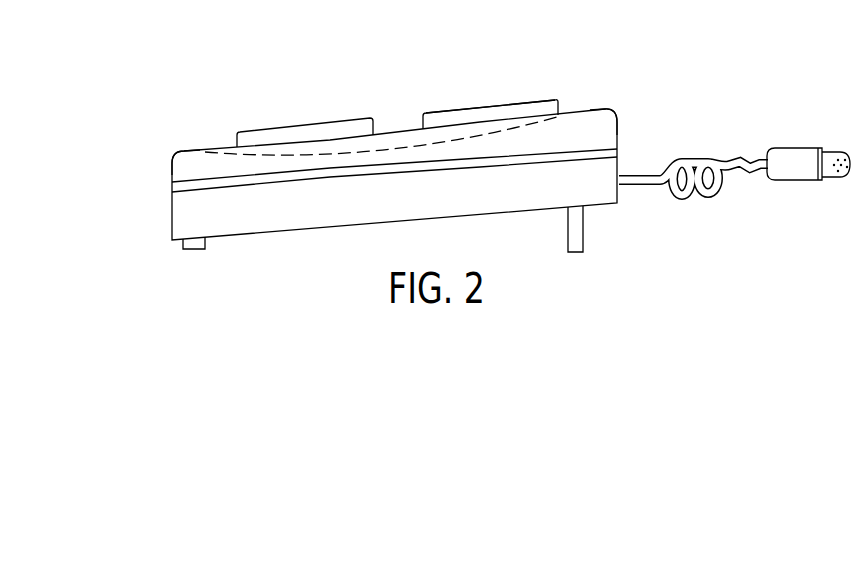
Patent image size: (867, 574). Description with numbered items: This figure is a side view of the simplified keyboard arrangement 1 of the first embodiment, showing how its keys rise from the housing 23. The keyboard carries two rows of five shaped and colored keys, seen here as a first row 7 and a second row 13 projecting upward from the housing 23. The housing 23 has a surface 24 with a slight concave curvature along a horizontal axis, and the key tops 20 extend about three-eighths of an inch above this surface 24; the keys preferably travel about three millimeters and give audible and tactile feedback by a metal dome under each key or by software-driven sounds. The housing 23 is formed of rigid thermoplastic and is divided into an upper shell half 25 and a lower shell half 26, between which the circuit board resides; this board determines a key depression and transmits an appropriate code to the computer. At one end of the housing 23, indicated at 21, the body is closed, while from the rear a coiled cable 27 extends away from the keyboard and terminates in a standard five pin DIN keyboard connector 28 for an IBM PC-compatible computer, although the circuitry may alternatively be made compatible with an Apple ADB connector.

The simplified keyboard arrangement 1 is at (170, 173).
The first row 7 is at (492, 106).
The second row 13 is at (297, 126).
The key tops 20 is at (452, 110).
The left end 21 is at (185, 150).
The housing 23 is at (619, 123).
The surface 24 is at (525, 128).
The upper shell half 25 is at (215, 177).
The lower shell half 26 is at (215, 230).
The coiled cable 27 is at (688, 155).
The keyboard connector 28 is at (800, 148).